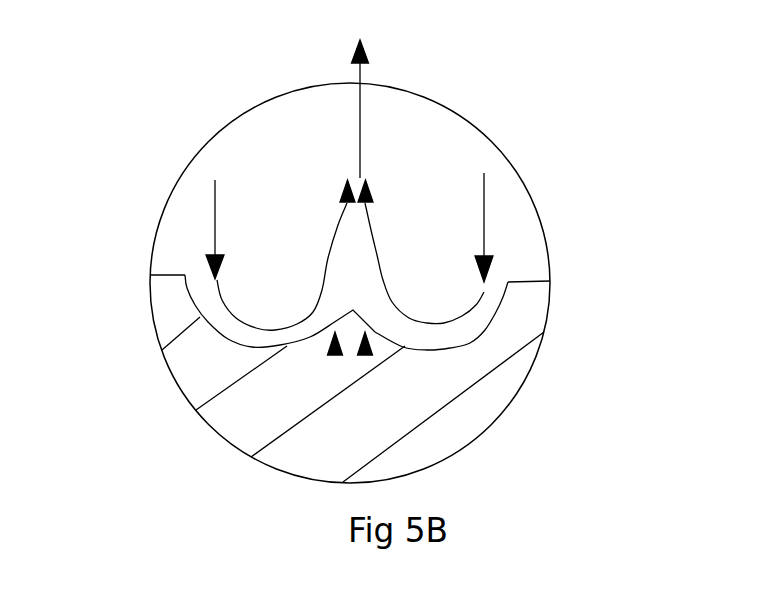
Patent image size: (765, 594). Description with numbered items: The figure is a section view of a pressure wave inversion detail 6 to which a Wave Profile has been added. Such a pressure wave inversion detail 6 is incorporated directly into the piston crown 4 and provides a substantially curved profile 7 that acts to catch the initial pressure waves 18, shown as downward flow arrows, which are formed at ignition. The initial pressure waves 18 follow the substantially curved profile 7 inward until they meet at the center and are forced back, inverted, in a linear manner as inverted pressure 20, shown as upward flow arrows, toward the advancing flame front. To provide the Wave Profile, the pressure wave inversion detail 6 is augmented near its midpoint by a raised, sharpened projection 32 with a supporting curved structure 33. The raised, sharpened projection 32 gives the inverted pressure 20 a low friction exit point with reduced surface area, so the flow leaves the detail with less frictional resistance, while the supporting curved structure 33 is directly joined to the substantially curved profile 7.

The piston crown 4 is at (168, 274).
The pressure wave inversion detail 6 is at (440, 350).
The substantially curved profile 7 is at (498, 308).
The initial pressure waves 18 is at (215, 200).
The inverted pressure 20 is at (363, 100).
The raised, sharpened projection 32 is at (353, 310).
The supporting curved structure 33 is at (365, 355).